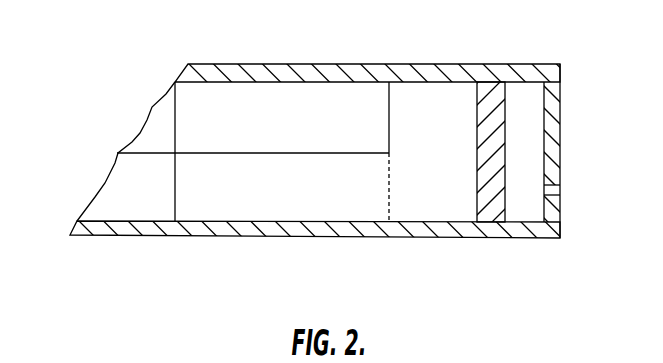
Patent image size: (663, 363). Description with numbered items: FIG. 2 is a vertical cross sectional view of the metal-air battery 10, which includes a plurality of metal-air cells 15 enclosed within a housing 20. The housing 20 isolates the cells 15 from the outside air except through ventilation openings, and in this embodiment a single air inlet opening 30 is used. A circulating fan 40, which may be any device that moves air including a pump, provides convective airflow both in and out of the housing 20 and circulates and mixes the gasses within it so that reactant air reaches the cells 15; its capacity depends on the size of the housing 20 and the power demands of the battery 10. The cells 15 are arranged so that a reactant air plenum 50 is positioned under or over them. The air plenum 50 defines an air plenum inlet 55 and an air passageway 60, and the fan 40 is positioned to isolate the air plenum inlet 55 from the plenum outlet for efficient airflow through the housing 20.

The metal-air battery 10 is at (158, 69).
The metal-air cells 15 is at (282, 130).
The housing 20 is at (382, 245).
The air inlet opening 30 is at (560, 190).
The circulating fan 40 is at (477, 118).
The reactant air plenum 50 is at (131, 207).
The air plenum inlet 55 is at (402, 202).
The air passageway 60 is at (263, 208).